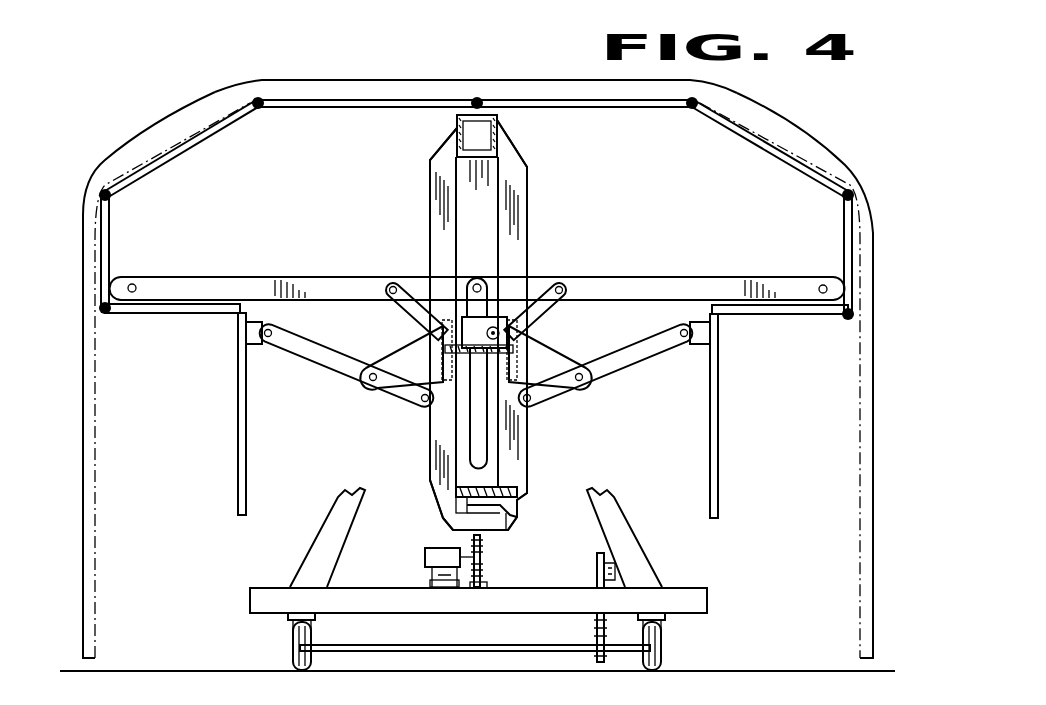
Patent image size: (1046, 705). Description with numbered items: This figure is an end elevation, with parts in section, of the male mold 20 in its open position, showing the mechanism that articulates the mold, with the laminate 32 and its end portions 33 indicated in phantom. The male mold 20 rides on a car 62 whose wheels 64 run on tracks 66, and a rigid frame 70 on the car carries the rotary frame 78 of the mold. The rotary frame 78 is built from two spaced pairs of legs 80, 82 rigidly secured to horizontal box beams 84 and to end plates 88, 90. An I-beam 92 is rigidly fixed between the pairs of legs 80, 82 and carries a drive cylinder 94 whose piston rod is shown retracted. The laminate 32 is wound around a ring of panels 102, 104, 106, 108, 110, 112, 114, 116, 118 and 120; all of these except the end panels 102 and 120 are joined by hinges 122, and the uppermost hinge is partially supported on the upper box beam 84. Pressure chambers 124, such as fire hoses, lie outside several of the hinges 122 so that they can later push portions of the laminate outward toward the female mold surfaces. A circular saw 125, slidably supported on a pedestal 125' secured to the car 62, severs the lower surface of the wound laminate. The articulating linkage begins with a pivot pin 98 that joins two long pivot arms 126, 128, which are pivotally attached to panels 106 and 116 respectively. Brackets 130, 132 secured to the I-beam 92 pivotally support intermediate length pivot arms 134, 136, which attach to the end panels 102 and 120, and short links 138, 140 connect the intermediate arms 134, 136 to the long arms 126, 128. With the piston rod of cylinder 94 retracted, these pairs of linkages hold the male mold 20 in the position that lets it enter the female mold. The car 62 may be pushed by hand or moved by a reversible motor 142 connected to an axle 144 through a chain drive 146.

The male mold 20 is at (208, 84).
The laminate 32 is at (325, 76).
The end portions 33 is at (98, 478).
The car 62 is at (250, 603).
The wheels 64 is at (291, 638).
The tracks 66 is at (293, 667).
The rigid frame 70 is at (340, 502).
The rotary frame 78 is at (540, 166).
The legs 80 is at (429, 179).
The legs 82 is at (521, 450).
The horizontal box beams 84 is at (456, 136).
The end plate 88 is at (488, 203).
The end plate 90 is at (513, 508).
The I-beam 92 is at (510, 325).
The cylinder 94 is at (443, 420).
The pivot pin 98 is at (476, 279).
The panel 102 is at (237, 372).
The panel 104 is at (137, 314).
The panel 106 is at (112, 233).
The panel 108 is at (182, 151).
The panel 110 is at (347, 110).
The panel 112 is at (613, 108).
The panel 114 is at (755, 148).
The panel 116 is at (843, 230).
The panel 118 is at (738, 318).
The panel 120 is at (720, 383).
The hinges 122 is at (478, 98).
The pressure chambers 124 is at (213, 95).
The circular saw 125 is at (542, 561).
The pedestal 125' is at (405, 567).
The long pivot arm 126 is at (218, 275).
The long pivot arm 128 is at (748, 275).
The bracket 130 is at (378, 366).
The bracket 132 is at (575, 364).
The intermediate length pivot arm 134 is at (299, 357).
The intermediate length pivot arm 136 is at (652, 360).
The short link 138 is at (387, 284).
The short link 140 is at (568, 287).
The reversible motor 142 is at (652, 557).
The axle 144 is at (475, 632).
The chain drive 146 is at (597, 633).